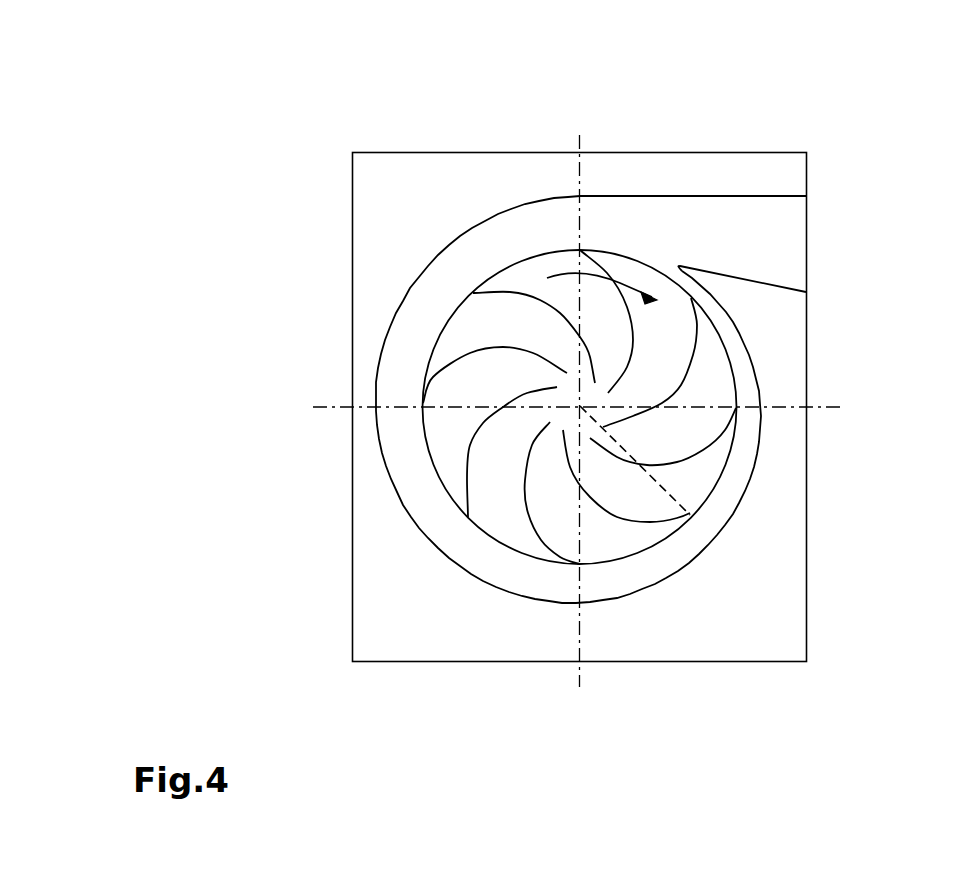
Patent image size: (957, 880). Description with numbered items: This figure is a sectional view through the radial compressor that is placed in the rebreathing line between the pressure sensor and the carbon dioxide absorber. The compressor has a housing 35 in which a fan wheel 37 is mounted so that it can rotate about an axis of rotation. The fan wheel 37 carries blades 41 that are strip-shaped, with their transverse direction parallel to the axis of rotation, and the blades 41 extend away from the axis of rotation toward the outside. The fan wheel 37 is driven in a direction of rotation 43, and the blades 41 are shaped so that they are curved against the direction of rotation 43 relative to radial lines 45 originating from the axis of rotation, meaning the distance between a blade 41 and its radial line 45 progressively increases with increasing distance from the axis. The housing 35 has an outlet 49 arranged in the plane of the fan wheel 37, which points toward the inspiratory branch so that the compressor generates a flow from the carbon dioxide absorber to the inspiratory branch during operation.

The housing 35 is at (748, 643).
The fan wheel 37 is at (688, 477).
The blades 41 is at (626, 293).
The direction of rotation 43 is at (633, 283).
The radial lines 45 is at (700, 503).
The outlet 49 is at (745, 260).